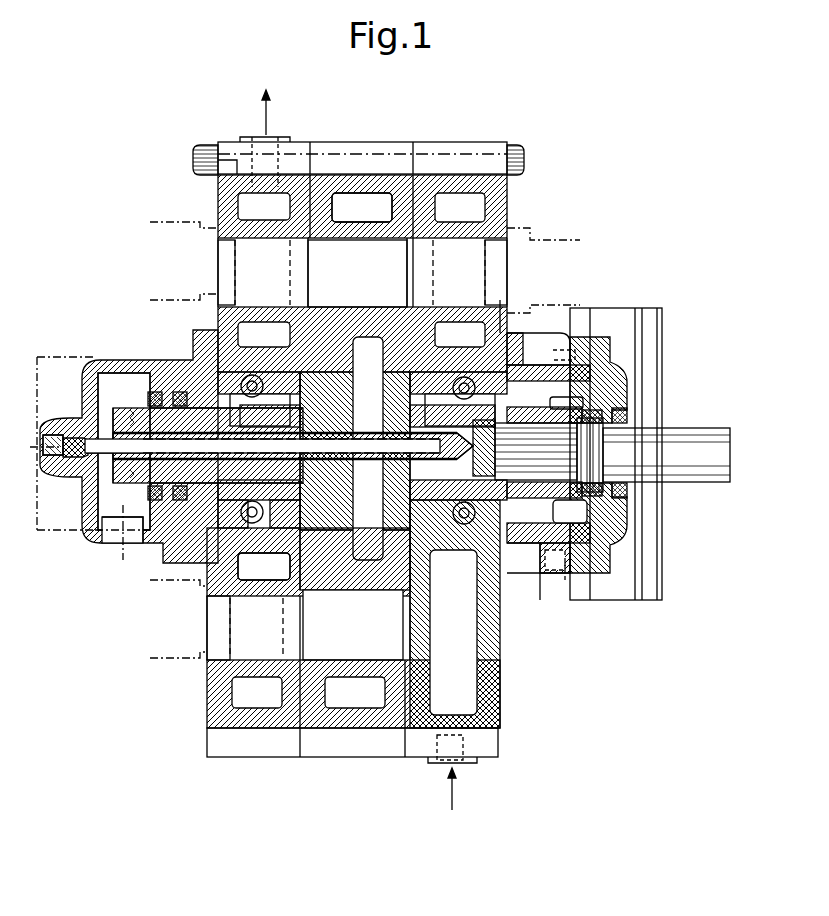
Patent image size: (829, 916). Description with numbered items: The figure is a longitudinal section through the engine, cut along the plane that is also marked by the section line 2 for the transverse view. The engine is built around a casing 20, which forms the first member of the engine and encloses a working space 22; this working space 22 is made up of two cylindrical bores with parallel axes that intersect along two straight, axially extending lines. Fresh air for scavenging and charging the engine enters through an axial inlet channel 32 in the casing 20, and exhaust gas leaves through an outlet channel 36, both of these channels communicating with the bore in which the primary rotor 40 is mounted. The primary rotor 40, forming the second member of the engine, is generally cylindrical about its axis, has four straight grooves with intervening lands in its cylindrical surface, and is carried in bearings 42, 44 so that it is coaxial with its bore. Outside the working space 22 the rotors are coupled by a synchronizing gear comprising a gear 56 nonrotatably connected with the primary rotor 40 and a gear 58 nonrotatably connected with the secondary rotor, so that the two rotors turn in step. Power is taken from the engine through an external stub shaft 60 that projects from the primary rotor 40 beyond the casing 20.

The section line 2— 2 is at (354, 165).
The casing 20 is at (448, 154).
The working space 22 is at (415, 279).
The inlet channel 32 is at (580, 270).
The outlet channel 36 is at (218, 254).
The primary rotor 40 is at (363, 258).
The bearing 42 is at (452, 542).
The bearing 44 is at (258, 540).
The gear 56 is at (565, 512).
The gear 58 is at (565, 580).
The stub shaft 60 is at (668, 444).